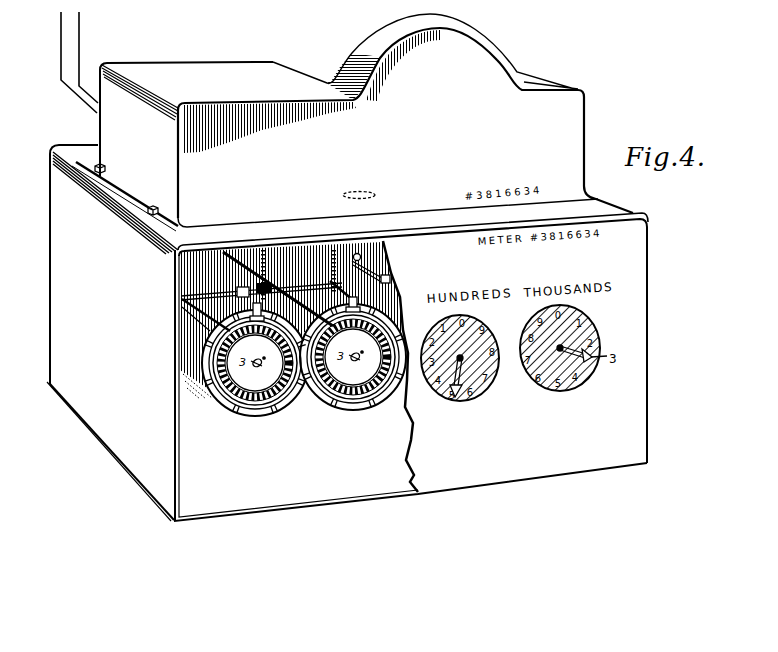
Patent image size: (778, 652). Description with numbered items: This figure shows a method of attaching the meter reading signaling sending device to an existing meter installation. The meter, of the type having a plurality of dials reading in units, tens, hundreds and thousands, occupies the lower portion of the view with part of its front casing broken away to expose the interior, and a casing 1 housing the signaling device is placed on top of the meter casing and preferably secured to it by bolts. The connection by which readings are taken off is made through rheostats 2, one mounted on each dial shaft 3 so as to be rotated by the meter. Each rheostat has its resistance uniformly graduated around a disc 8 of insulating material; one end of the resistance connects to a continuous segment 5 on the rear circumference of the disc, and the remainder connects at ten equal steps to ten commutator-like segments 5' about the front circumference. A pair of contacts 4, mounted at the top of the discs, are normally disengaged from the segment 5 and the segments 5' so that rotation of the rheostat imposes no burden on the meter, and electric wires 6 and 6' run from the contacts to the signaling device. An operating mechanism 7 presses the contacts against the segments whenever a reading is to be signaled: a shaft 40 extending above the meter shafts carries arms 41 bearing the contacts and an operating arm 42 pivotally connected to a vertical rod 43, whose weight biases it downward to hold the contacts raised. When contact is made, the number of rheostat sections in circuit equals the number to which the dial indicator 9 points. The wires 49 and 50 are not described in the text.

The casing 1 is at (586, 117).
The rheostat 2 is at (304, 368).
The dial shaft 3 is at (212, 319).
The contact 4 is at (334, 297).
The continuous segment 5 is at (279, 360).
The commutator segment 5' is at (273, 360).
The electric wire 6 is at (278, 280).
The electric wire 6' is at (296, 267).
The operating mechanism 7 is at (368, 264).
The disc 8 is at (272, 385).
The dial indicator 9 is at (466, 389).
The shaft 40 is at (289, 273).
The arm 41 is at (215, 302).
The operating arm 42 is at (389, 274).
The vertical rod 43 is at (359, 253).
The wire 49 is at (62, 31).
The wire 50 is at (80, 25).